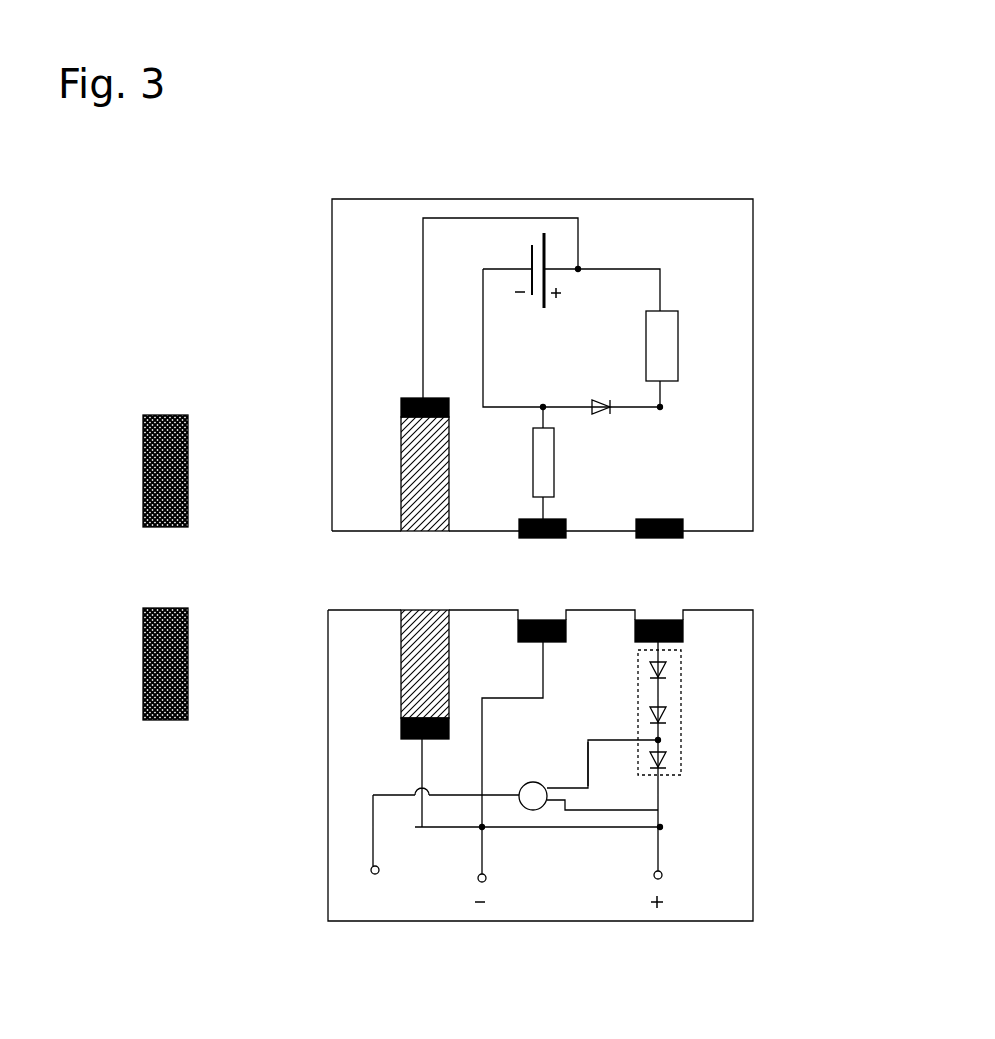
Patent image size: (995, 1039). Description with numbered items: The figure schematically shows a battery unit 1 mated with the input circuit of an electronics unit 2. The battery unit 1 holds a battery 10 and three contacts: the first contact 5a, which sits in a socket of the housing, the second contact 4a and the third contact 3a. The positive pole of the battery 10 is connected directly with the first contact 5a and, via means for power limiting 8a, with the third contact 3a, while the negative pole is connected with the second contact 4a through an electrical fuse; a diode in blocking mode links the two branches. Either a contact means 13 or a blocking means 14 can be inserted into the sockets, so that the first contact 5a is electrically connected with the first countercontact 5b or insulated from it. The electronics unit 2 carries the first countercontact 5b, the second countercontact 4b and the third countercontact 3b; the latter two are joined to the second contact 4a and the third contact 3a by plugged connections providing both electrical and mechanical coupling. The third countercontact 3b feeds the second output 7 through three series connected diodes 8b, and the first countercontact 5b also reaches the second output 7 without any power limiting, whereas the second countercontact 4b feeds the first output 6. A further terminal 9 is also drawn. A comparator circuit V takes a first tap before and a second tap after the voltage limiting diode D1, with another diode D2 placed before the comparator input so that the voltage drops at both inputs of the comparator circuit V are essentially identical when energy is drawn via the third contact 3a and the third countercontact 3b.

The battery unit 1 is at (758, 260).
The electronics unit 2 is at (755, 878).
The third contact 3a is at (688, 522).
The third countercontact 3b is at (688, 630).
The second contact 4a is at (572, 515).
The second countercontact 4b is at (568, 632).
The first contact 5a is at (400, 392).
The first countercontact 5b is at (396, 733).
The first output 6 is at (482, 882).
The second output 7 is at (658, 879).
The means for power limiting 8a is at (668, 352).
The series connected diodes 8b is at (683, 700).
The terminal 9 is at (375, 874).
The battery 10 is at (533, 316).
The contact means 13 is at (415, 647).
The blocking means 14 is at (138, 503).
The diode D1 is at (665, 750).
The diode D2 is at (586, 760).
The comparator circuit V is at (542, 806).